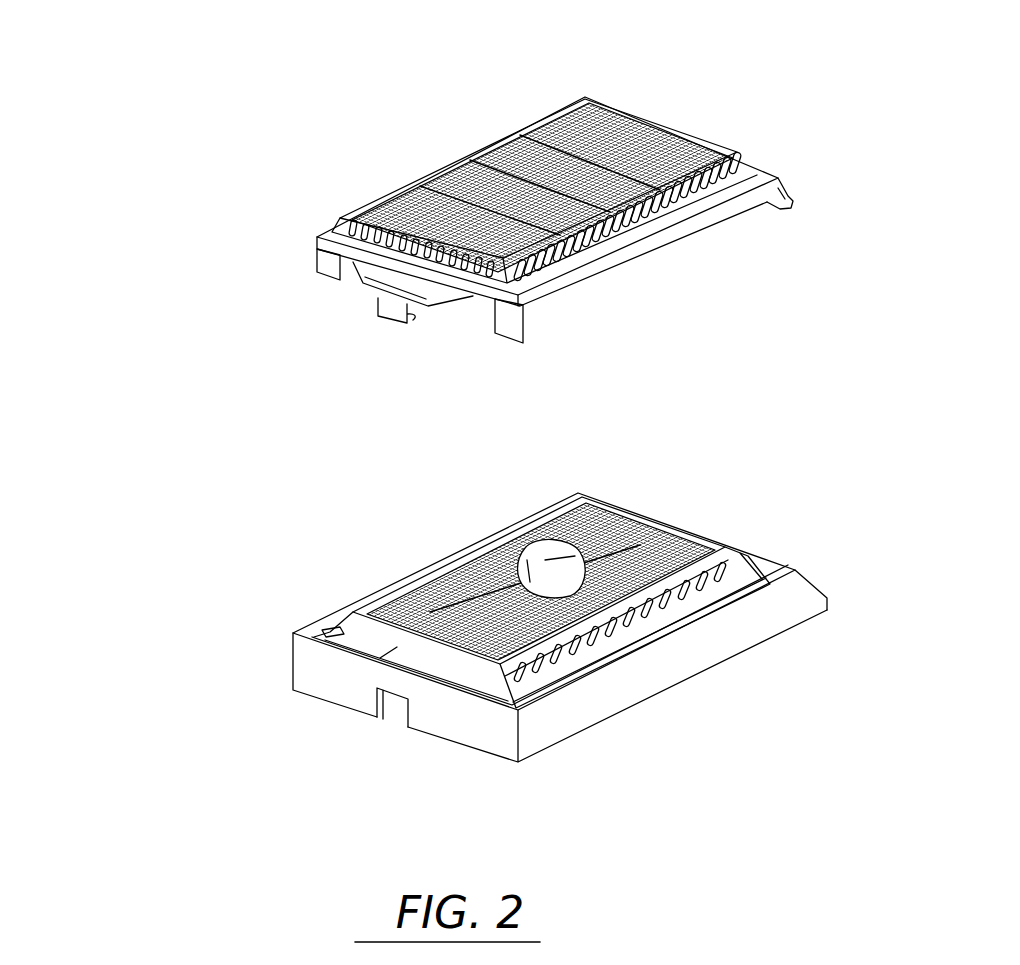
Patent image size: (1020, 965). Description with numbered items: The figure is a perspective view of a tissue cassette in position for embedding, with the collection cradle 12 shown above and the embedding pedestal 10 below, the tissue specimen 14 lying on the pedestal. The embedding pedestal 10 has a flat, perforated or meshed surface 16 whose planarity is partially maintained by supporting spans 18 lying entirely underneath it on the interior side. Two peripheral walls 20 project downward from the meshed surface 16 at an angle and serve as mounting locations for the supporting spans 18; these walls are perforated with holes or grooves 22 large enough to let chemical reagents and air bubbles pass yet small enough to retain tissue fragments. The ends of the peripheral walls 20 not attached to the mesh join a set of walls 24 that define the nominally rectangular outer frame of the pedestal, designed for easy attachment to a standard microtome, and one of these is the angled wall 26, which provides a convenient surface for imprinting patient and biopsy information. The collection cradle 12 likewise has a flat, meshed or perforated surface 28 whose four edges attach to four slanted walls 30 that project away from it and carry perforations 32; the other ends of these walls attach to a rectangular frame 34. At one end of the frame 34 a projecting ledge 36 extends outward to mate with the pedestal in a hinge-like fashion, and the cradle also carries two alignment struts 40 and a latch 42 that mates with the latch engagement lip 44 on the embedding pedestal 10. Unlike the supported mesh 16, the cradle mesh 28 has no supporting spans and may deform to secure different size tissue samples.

The embedding pedestal 10 is at (160, 458).
The collection cradle 12 is at (160, 65).
The tissue specimen 14 is at (637, 517).
The meshed surface 16 is at (470, 583).
The supporting spans 18 is at (387, 636).
The peripheral walls 20 is at (340, 633).
The holes or grooves 22 is at (647, 613).
The walls 24 is at (303, 682).
The angled wall 26 is at (812, 582).
The meshed surface 28 is at (528, 178).
The slanted walls 30 is at (355, 217).
The slots 32 is at (368, 218).
The rectangular frame 34 is at (633, 253).
The projecting ledge 36 is at (768, 212).
The alignment struts 40 is at (327, 268).
The latch 42 is at (397, 313).
The latch engagement lip 44 is at (388, 697).